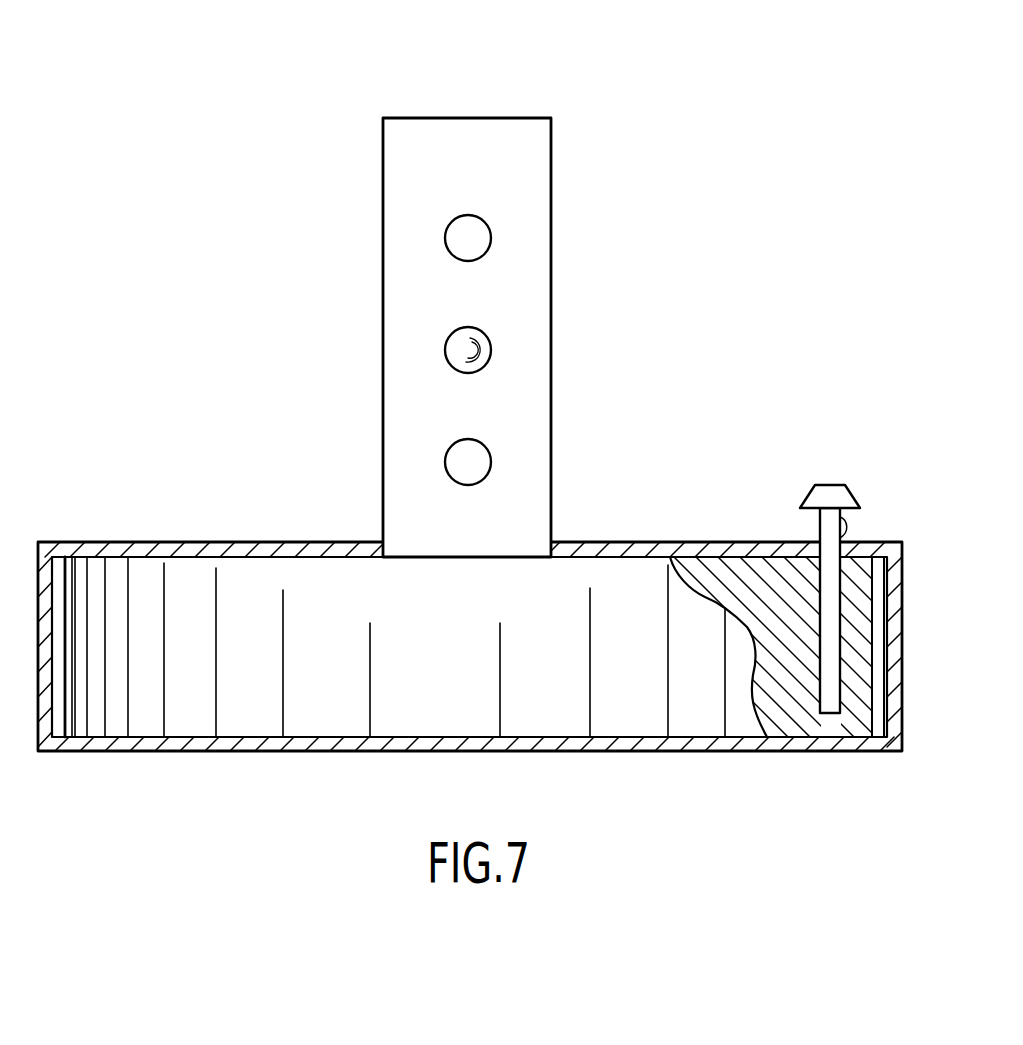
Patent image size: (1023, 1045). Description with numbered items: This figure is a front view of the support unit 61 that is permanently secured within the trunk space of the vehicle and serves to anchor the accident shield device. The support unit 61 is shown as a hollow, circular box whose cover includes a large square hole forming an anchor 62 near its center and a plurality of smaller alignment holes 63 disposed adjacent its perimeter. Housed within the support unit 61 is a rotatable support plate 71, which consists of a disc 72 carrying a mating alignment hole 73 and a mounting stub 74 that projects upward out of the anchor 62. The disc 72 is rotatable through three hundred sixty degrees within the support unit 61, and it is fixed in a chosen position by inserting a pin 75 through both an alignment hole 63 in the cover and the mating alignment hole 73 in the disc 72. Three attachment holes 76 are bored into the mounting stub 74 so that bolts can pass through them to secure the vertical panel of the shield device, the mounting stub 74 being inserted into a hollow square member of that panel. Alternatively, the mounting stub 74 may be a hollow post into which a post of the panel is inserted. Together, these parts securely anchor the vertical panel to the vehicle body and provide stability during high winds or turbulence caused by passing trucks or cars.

The support unit 61 is at (902, 637).
The anchor 62 is at (384, 555).
The alignment holes 63 is at (843, 522).
The rotatable support plate 71 is at (480, 88).
The disc 72 is at (638, 557).
The mating alignment hole 73 is at (848, 603).
The mounting stub 74 is at (551, 340).
The pin 75 is at (820, 485).
The attachment holes 76 is at (488, 225).